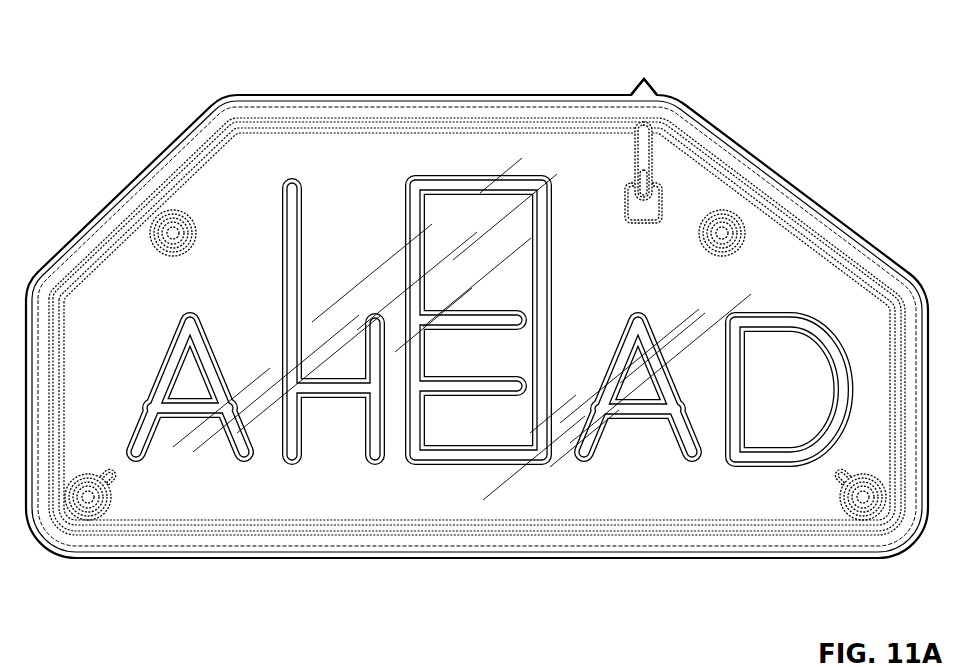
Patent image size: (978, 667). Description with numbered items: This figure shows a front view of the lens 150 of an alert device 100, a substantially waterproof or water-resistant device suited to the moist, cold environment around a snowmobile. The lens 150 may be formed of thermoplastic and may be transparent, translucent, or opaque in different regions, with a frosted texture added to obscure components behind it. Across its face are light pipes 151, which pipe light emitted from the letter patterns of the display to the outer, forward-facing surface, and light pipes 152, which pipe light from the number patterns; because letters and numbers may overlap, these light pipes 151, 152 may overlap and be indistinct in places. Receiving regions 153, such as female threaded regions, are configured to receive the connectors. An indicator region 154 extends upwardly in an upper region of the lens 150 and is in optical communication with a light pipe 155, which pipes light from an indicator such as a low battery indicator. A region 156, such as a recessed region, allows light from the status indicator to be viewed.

The alert device 100 is at (110, 76).
The lens 150 is at (307, 90).
The light pipe 151 is at (167, 418).
The light pipe 152 is at (301, 197).
The receiving region 153 is at (173, 212).
The indicator region 154 is at (647, 80).
The light pipe 155 is at (634, 158).
The region 156 is at (664, 203).